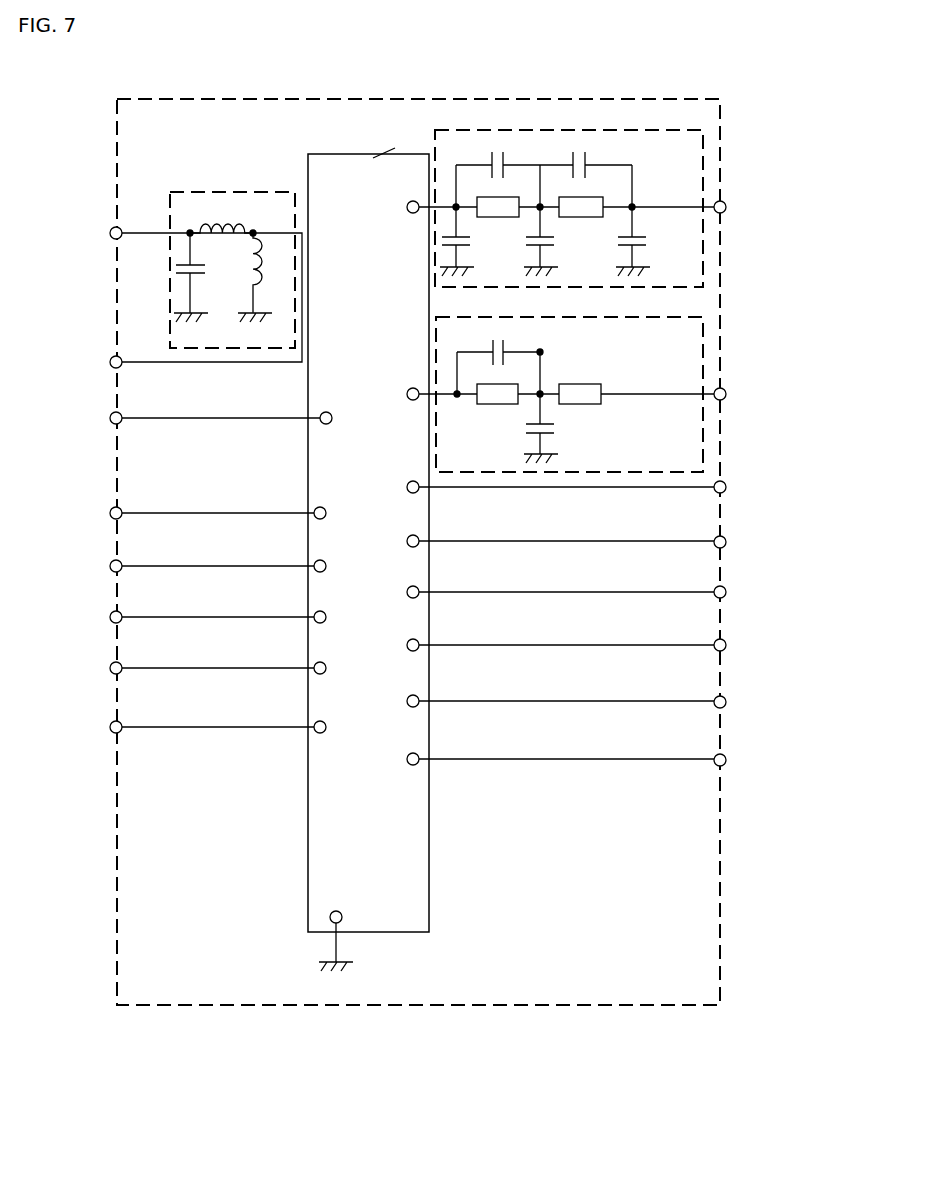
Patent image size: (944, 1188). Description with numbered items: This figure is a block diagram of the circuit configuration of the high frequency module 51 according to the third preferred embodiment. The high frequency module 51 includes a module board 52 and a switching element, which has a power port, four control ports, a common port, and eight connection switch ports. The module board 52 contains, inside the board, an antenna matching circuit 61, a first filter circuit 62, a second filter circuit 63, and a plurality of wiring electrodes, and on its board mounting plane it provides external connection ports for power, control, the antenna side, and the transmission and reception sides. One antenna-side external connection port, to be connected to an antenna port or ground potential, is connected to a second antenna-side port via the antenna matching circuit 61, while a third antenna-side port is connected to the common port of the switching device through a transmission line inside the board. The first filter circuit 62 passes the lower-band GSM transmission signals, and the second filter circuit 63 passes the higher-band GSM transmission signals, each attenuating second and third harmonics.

The high frequency module 51 is at (834, 138).
The module board 52 is at (724, 98).
The antenna matching circuit 61 is at (250, 184).
The first filter circuit 62 is at (638, 123).
The second filter circuit 63 is at (638, 309).